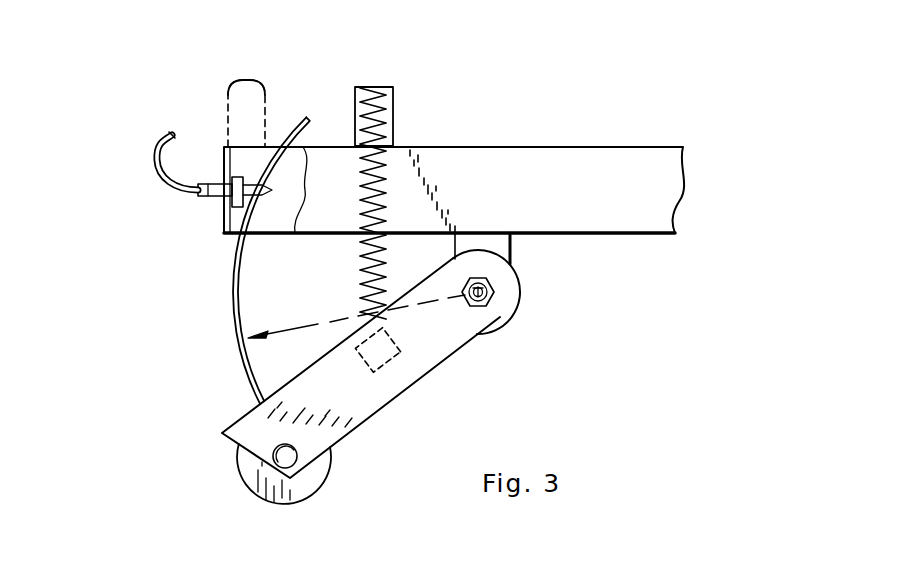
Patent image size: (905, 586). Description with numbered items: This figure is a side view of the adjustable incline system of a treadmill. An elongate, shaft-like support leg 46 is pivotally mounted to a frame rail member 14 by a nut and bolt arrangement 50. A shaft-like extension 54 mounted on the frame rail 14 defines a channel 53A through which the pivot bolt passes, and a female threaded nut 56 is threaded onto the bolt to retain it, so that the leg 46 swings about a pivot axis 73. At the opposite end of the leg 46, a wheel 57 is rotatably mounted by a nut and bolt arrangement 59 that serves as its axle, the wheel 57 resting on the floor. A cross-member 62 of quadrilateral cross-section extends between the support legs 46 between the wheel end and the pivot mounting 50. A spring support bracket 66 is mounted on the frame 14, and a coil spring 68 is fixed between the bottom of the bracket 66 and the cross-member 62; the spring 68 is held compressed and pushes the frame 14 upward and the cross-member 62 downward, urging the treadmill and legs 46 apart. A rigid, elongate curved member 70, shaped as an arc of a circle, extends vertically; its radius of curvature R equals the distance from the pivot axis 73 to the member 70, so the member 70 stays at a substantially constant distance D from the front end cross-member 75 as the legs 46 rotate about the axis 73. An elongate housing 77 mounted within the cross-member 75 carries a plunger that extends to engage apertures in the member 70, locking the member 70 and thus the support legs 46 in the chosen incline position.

The frame rail member 14 is at (566, 192).
The support leg 46 is at (448, 342).
The nut and bolt arrangement 50 is at (495, 290).
The channel 53A is at (495, 292).
The shaft-like extension 54 is at (497, 320).
The nut 56 is at (492, 300).
The wheel 57 is at (307, 485).
The nut and bolt arrangement 59 is at (305, 467).
The cross-member 62 is at (378, 362).
The spring support bracket 66 is at (393, 112).
The coil spring 68 is at (364, 270).
The curved member 70 is at (239, 317).
The pivot axis 73 is at (483, 284).
The front end cross-member 75 is at (230, 208).
The housing 77 is at (212, 184).
The distance D is at (243, 79).
The radius of curvature R is at (294, 329).